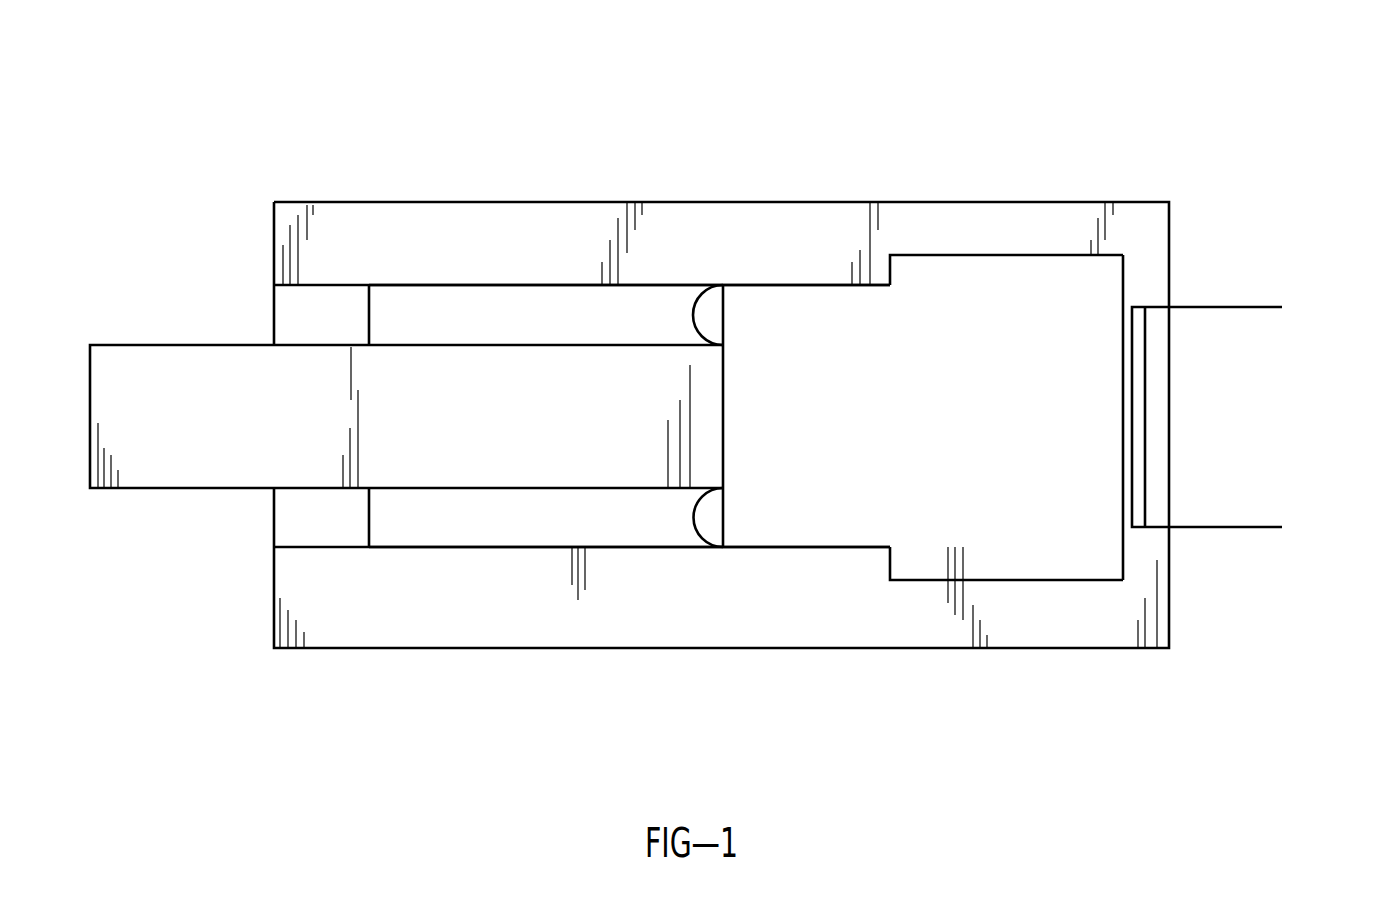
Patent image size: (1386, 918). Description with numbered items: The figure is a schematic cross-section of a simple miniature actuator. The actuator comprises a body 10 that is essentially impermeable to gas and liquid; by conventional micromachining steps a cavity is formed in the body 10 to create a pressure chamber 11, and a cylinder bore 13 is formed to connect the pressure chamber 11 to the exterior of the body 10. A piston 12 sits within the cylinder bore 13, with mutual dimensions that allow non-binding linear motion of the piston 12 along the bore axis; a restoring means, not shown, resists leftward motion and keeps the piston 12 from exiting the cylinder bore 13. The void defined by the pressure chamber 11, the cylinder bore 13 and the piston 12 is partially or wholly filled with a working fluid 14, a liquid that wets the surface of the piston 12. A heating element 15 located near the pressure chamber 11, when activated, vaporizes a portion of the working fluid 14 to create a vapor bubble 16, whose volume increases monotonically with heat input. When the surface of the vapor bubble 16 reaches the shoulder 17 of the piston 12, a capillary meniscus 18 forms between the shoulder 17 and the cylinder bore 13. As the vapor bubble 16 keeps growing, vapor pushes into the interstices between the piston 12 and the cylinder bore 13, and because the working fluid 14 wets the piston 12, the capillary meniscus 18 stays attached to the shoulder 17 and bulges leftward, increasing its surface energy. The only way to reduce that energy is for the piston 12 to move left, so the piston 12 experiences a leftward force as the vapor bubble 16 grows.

The body 10 is at (938, 203).
The pressure chamber 11 is at (1043, 253).
The piston 12 is at (146, 346).
The cylinder bore 13 is at (326, 546).
The working fluid 14 is at (518, 308).
The heating element 15 is at (1153, 421).
The vapor bubble 16 is at (1037, 540).
The shoulder 17 is at (723, 488).
The capillary meniscus 18 is at (700, 312).